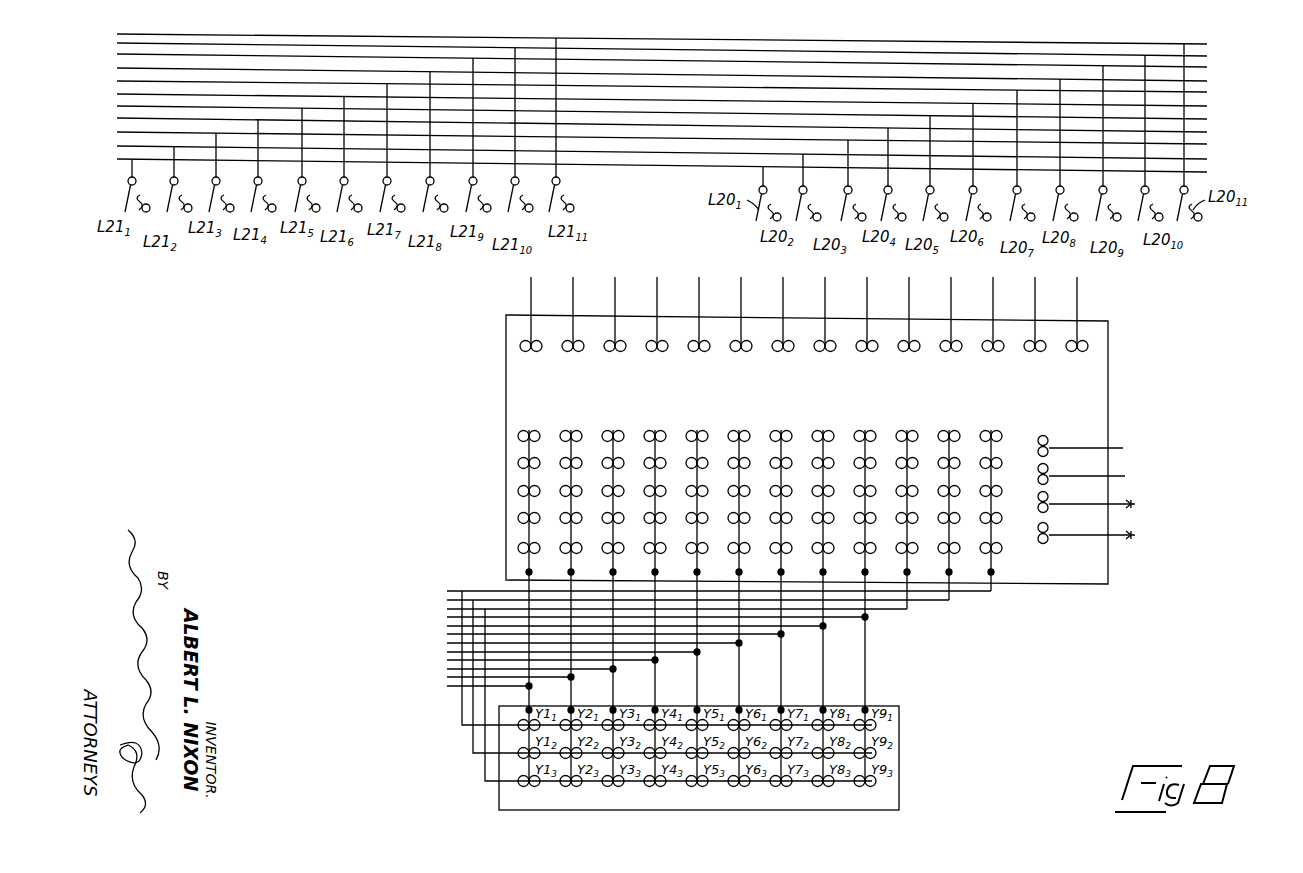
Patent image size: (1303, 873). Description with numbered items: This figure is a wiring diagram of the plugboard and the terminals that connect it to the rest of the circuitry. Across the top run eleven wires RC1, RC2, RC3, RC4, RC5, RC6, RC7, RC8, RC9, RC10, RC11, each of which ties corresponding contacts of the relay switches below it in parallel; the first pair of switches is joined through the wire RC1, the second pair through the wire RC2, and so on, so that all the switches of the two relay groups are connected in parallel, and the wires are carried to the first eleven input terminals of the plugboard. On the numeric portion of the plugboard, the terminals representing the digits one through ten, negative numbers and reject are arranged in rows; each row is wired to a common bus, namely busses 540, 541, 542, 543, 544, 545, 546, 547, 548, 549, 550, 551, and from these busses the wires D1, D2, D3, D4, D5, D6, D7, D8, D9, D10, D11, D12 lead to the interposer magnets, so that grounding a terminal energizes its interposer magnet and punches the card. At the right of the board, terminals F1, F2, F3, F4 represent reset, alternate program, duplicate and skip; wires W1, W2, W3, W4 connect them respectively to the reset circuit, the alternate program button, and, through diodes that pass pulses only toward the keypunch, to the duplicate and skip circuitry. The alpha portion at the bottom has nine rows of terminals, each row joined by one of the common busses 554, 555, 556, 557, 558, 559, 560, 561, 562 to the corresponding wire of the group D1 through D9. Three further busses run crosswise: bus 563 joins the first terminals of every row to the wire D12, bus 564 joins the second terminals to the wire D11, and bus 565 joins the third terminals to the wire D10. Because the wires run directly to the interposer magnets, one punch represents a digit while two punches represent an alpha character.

The common bus 540 is at (530, 567).
The common bus 541 is at (572, 567).
The common bus 542 is at (614, 567).
The common bus 543 is at (656, 567).
The common bus 544 is at (698, 567).
The common bus 545 is at (740, 567).
The common bus 546 is at (782, 567).
The common bus 547 is at (824, 567).
The common bus 548 is at (866, 567).
The common bus 549 is at (908, 567).
The common bus 550 is at (950, 567).
The common bus 551 is at (992, 567).
The common bus 554 is at (528, 710).
The common bus 555 is at (572, 706).
The common bus 556 is at (614, 706).
The common bus 557 is at (656, 706).
The common bus 558 is at (698, 706).
The common bus 559 is at (740, 706).
The common bus 560 is at (782, 706).
The common bus 561 is at (824, 706).
The common bus 562 is at (866, 706).
The common bus 563 is at (462, 725).
The common bus 564 is at (473, 753).
The common bus 565 is at (485, 781).
The wire RC1 is at (1207, 172).
The wire RC2 is at (1207, 159).
The wire RC3 is at (1207, 144).
The wire RC4 is at (1207, 132).
The wire RC5 is at (1207, 119).
The wire RC6 is at (1207, 106).
The wire RC7 is at (1207, 92).
The wire RC8 is at (1207, 81).
The wire RC9 is at (1207, 67).
The wire RC10 is at (1207, 56).
The wire RC11 is at (1207, 44).
The wire D1 is at (532, 682).
The wire D2 is at (574, 680).
The wire D3 is at (615, 678).
The wire D4 is at (657, 667).
The wire D5 is at (699, 663).
The wire D6 is at (741, 658).
The wire D7 is at (783, 656).
The wire D8 is at (825, 652).
The wire D9 is at (867, 645).
The wire D10 is at (905, 611).
The wire D11 is at (949, 602).
The wire D12 is at (991, 593).
The terminal F1 is at (1056, 440).
The terminal F2 is at (1058, 469).
The terminal F3 is at (1056, 497).
The terminal F4 is at (1056, 528).
The wire W1 is at (1102, 449).
The wire W2 is at (1104, 476).
The wire W3 is at (1110, 504).
The wire W4 is at (1110, 535).